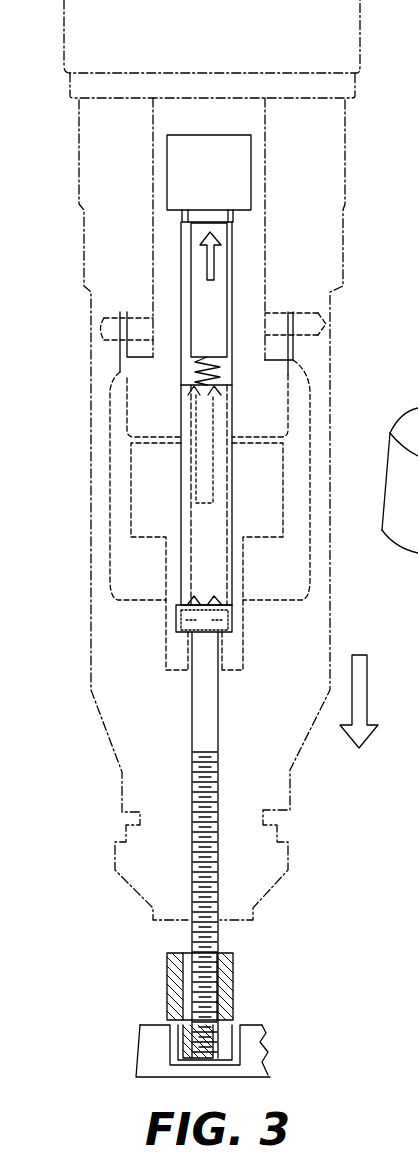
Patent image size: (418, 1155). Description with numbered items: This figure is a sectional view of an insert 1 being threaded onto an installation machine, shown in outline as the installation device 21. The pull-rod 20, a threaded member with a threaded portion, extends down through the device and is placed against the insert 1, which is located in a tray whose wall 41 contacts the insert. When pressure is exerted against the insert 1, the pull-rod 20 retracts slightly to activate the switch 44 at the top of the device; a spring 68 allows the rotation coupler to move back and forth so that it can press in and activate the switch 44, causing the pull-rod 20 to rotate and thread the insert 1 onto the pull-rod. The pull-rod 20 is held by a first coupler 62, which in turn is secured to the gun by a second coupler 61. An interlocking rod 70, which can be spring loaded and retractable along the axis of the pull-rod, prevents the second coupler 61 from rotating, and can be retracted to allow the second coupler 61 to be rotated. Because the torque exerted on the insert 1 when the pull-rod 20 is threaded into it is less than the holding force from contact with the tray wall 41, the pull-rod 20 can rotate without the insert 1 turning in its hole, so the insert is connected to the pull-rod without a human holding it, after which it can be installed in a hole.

The insert 1 is at (235, 952).
The pull-rod 20 is at (190, 937).
The housing 21 is at (68, 606).
The wall 41 is at (258, 1035).
The switch 44 is at (245, 178).
The second coupler 61 is at (312, 585).
The first coupler 62 is at (240, 628).
The spring 68 is at (200, 372).
The interlocking rod 70 is at (326, 330).